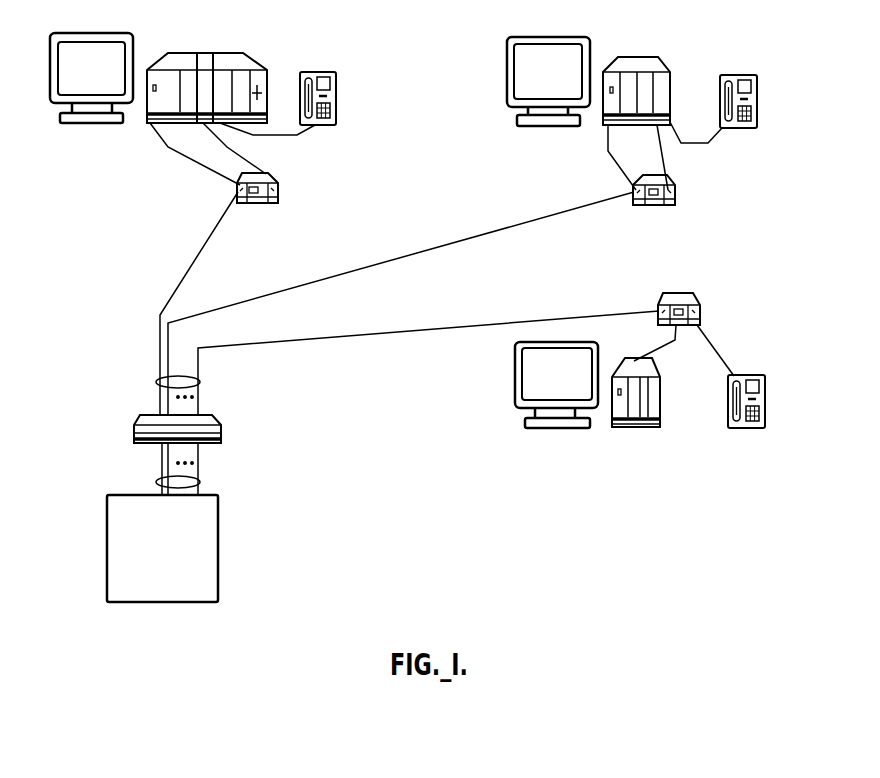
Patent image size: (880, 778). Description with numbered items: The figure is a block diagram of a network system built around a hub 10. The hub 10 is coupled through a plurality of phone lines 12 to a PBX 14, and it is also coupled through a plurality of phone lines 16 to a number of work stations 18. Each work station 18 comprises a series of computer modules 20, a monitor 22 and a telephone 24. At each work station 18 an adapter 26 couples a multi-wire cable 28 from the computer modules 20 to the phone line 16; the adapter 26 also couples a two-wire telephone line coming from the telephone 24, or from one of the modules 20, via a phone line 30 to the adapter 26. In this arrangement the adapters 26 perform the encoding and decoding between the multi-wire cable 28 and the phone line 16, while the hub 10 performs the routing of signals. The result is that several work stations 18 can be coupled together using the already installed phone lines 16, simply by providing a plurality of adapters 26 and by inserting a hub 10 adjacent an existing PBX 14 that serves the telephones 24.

The hub 10 is at (142, 417).
The phone lines 12 is at (160, 464).
The PBX 14 is at (218, 548).
The phone lines 16 is at (182, 282).
The work station 18 is at (414, 254).
The computer modules 20 is at (178, 54).
The monitor 22 is at (128, 34).
The telephone 24 is at (330, 72).
The adapter 26 is at (278, 178).
The multi-wire cable 28 is at (196, 158).
The phone line 30 is at (264, 165).